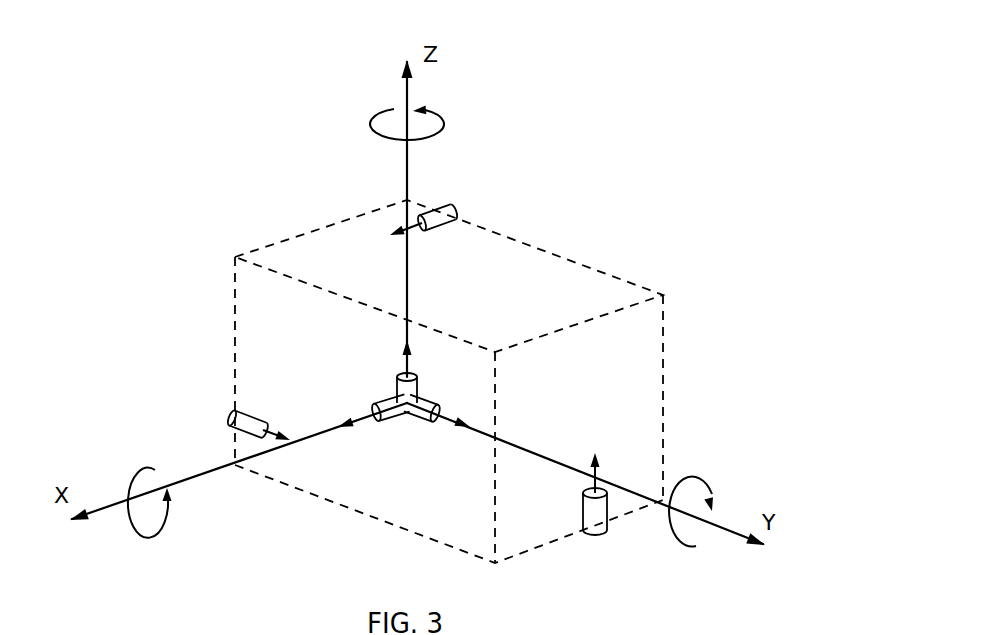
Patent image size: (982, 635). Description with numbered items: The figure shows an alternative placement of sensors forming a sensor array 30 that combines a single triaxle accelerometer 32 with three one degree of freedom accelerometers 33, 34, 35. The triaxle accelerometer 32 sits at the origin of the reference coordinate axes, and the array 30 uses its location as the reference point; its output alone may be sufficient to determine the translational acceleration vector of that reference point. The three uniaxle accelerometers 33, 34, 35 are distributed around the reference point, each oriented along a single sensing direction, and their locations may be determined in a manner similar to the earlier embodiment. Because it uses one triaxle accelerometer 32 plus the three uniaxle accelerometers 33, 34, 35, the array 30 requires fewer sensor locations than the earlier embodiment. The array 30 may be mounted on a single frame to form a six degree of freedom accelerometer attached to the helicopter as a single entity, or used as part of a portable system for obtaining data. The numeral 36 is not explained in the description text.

The sensor array 30 is at (704, 182).
The triaxle accelerometer 32 is at (420, 418).
The one degree of freedom accelerometer 33 is at (232, 407).
The one degree of freedom accelerometer 34 is at (413, 388).
The one degree of freedom accelerometer 35 is at (455, 219).
The accelerometer 36 is at (444, 206).